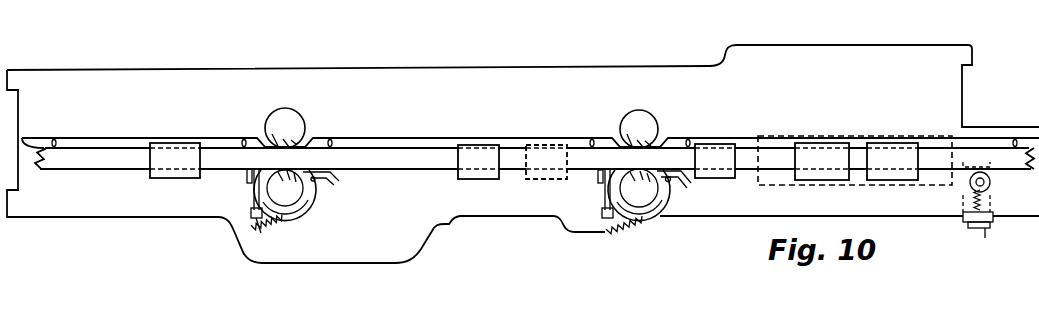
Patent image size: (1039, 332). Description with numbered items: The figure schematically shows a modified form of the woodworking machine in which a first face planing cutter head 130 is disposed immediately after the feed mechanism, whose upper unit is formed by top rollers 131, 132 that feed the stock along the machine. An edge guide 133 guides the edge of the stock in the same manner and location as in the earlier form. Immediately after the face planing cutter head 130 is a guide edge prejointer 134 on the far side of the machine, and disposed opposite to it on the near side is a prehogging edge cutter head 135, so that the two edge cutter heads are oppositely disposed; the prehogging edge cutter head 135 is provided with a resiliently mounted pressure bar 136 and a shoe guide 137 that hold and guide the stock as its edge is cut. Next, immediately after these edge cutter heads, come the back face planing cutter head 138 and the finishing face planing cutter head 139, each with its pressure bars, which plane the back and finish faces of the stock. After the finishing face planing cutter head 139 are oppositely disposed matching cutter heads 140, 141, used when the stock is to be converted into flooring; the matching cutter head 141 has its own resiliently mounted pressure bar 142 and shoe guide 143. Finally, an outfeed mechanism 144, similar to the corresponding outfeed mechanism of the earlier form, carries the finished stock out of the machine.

The first face planing cutter head 130 is at (722, 143).
The top roller 131 is at (810, 146).
The top roller 132 is at (882, 146).
The edge guide 133 is at (680, 140).
The guide edge prejointer 134 is at (641, 116).
The prehogging edge cutter head 135 is at (650, 198).
The resiliently mounted pressure bar 136 is at (673, 197).
The shoe guide 137 is at (606, 195).
The back face planing cutter head 138 is at (547, 180).
The finishing face planing cutter head 139 is at (476, 180).
The matching cutter head 140 is at (291, 123).
The matching cutter head 141 is at (294, 197).
The resiliently mounted pressure bar 142 is at (325, 193).
The shoe guide 143 is at (248, 192).
The outfeed mechanism 144 is at (165, 180).